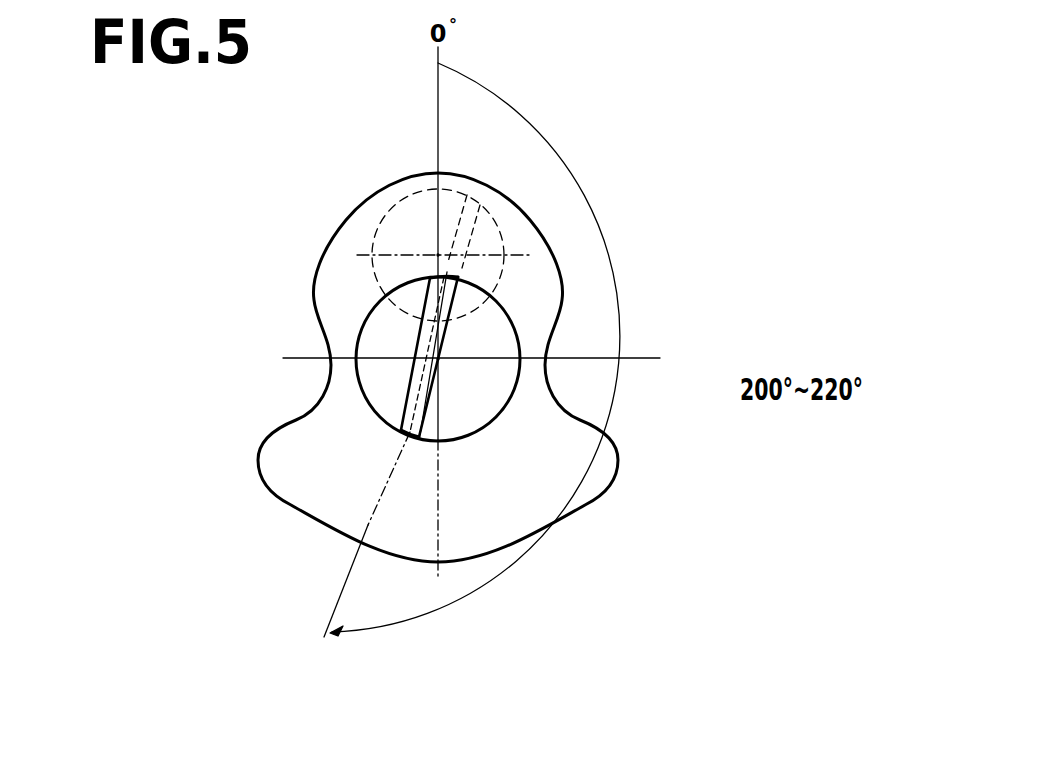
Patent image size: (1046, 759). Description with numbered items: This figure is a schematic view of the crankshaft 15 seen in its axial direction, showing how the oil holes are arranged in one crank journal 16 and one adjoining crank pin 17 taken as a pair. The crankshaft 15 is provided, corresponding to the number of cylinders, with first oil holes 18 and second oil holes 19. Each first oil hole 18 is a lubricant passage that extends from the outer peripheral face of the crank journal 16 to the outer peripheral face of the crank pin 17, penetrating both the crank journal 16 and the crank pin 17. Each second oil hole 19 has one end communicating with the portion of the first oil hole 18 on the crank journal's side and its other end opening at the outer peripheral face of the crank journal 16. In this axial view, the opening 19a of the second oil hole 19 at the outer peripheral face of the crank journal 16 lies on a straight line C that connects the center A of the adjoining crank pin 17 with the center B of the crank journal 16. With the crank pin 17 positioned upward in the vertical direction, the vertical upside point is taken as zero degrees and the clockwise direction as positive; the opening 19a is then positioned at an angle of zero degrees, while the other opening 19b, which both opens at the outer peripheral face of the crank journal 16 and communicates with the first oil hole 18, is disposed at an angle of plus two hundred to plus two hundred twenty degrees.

The crankshaft 15 is at (591, 250).
The crank journal 16 is at (503, 390).
The crank pin 17 is at (480, 237).
The first oil hole 18 is at (457, 208).
The second oil hole 19 is at (413, 340).
The opening of second oil hole 19a is at (437, 277).
The other opening of second oil hole 19b is at (407, 428).
The center of crank pin A is at (437, 254).
The center of crank journal B is at (438, 360).
The straight line C is at (430, 342).